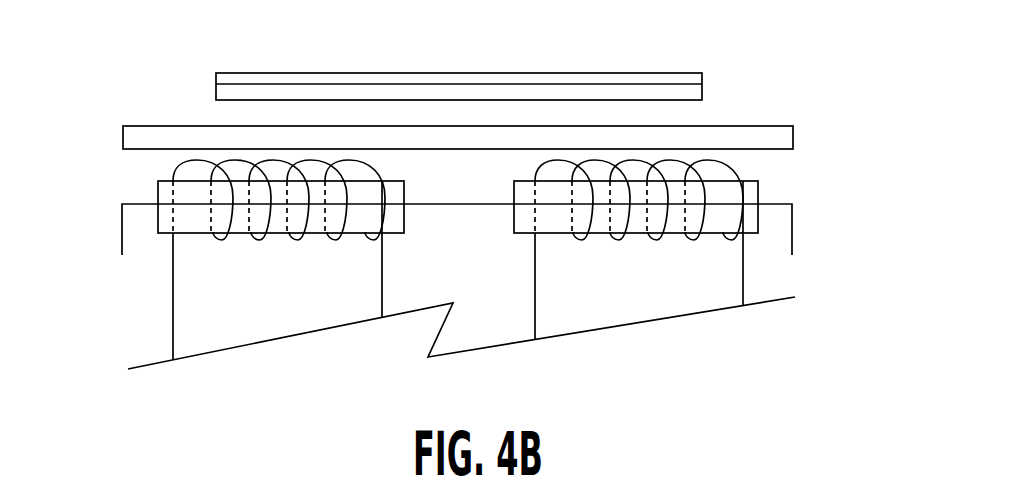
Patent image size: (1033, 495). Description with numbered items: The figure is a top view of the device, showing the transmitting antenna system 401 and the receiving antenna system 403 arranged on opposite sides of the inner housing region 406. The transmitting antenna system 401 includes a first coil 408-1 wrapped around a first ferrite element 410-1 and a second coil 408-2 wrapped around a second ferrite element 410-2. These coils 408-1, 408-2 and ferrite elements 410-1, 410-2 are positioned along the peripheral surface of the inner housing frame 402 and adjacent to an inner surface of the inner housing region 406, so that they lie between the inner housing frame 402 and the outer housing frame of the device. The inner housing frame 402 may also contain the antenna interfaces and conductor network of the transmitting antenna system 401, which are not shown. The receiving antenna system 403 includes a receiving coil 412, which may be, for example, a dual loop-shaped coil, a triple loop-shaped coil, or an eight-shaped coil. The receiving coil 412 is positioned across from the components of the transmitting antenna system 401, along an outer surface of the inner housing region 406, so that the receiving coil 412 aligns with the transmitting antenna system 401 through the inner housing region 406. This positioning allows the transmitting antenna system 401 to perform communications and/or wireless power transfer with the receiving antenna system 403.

The transmitting antenna system 401 is at (822, 235).
The inner housing frame 402 is at (135, 225).
The receiving antenna system 403 is at (192, 84).
The inner housing region 406 is at (763, 137).
The first coil 408-1 is at (298, 242).
The second coil 408-2 is at (656, 240).
The first ferrite element 410-1 is at (158, 195).
The second ferrite element 410-2 is at (758, 195).
The receiving coil 412 is at (566, 83).